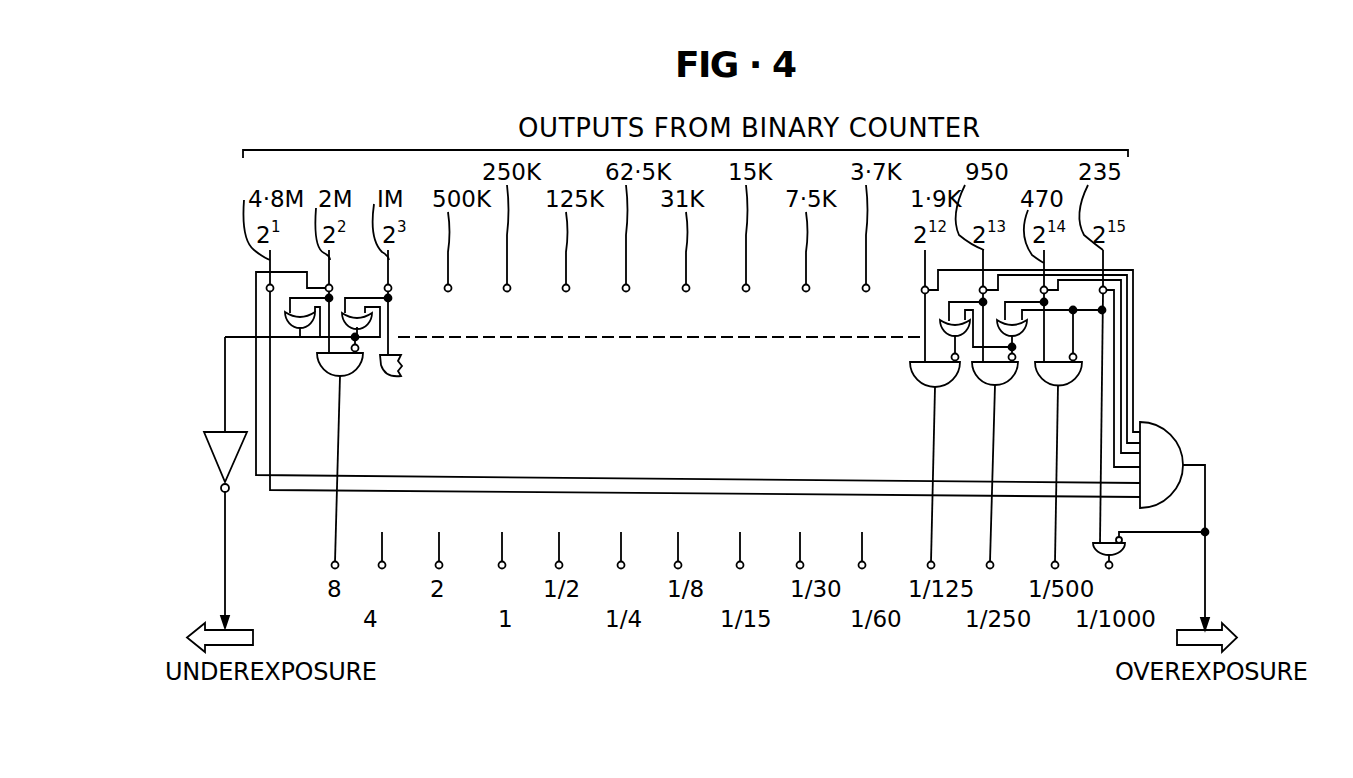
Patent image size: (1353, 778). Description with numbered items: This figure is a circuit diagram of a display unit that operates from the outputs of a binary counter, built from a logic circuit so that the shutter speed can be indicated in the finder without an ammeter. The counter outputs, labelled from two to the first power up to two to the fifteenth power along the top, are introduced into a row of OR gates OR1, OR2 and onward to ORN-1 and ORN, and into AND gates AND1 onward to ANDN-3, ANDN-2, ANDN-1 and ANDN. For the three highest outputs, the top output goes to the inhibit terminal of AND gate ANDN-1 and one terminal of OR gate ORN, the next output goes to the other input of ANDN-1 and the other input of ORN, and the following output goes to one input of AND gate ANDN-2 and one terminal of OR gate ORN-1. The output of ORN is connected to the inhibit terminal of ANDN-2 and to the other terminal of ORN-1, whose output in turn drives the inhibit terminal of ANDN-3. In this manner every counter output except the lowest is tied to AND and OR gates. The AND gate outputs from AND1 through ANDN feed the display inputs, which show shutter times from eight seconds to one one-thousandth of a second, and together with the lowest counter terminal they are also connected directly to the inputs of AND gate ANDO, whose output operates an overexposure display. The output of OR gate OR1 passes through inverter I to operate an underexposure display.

The OR gate OR1 is at (290, 319).
The OR gate OR2 is at (343, 310).
The AND gate AND1 is at (337, 370).
The inverter I is at (215, 455).
The OR gate ORN-1 is at (940, 325).
The OR gate ORN is at (1027, 328).
The AND gate ANDN-3 is at (915, 382).
The AND gate ANDN-2 is at (983, 373).
The AND gate ANDN-1 is at (1048, 373).
The AND gate ANDO is at (1178, 413).
The AND gate ANDN is at (1123, 547).